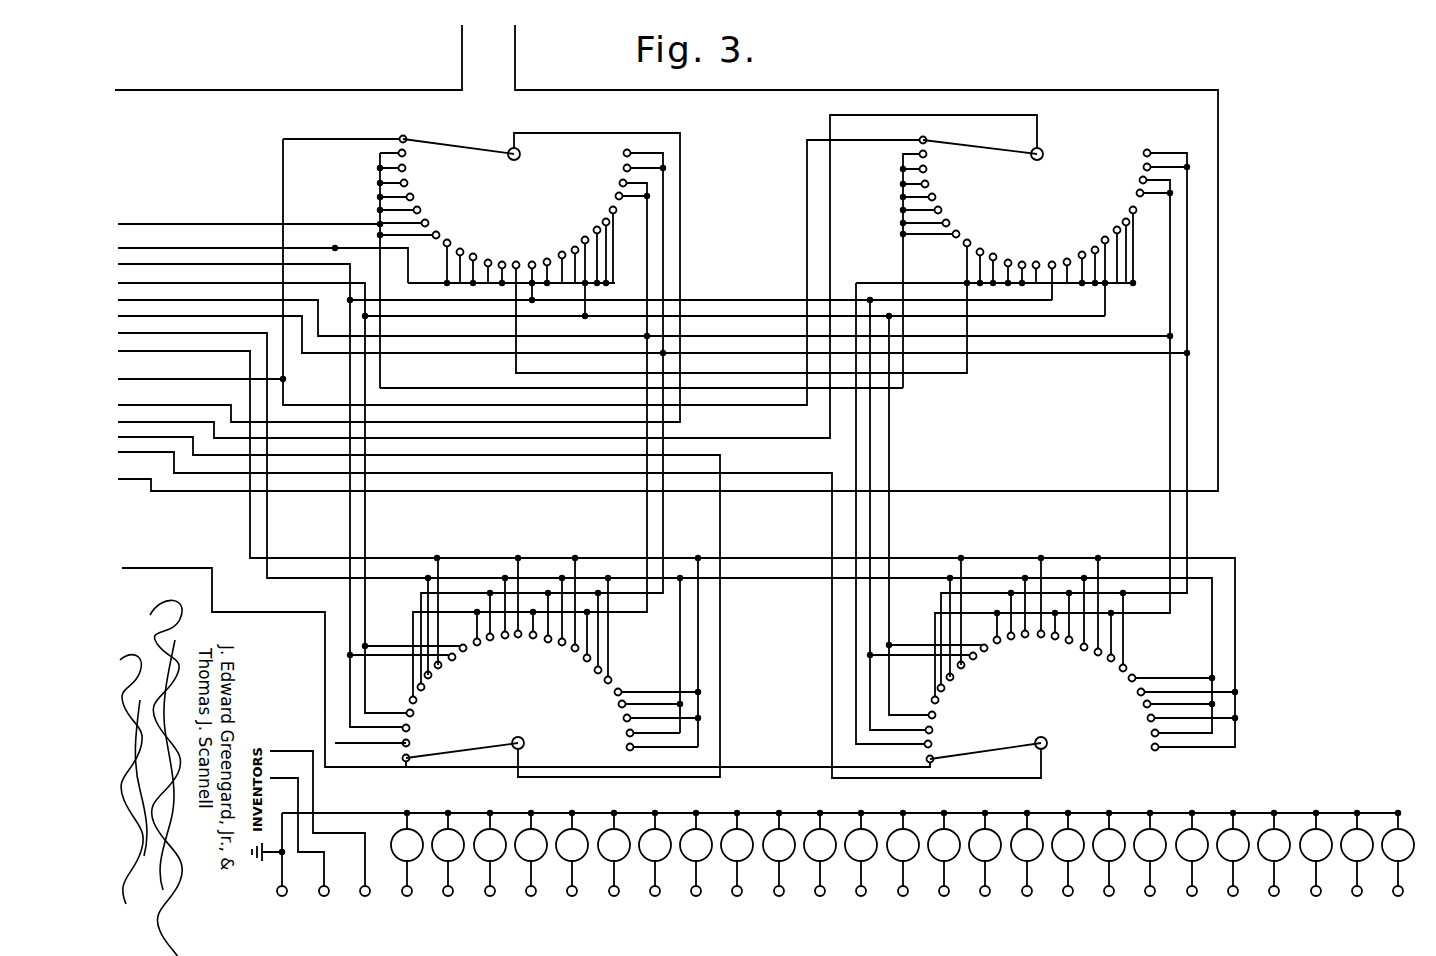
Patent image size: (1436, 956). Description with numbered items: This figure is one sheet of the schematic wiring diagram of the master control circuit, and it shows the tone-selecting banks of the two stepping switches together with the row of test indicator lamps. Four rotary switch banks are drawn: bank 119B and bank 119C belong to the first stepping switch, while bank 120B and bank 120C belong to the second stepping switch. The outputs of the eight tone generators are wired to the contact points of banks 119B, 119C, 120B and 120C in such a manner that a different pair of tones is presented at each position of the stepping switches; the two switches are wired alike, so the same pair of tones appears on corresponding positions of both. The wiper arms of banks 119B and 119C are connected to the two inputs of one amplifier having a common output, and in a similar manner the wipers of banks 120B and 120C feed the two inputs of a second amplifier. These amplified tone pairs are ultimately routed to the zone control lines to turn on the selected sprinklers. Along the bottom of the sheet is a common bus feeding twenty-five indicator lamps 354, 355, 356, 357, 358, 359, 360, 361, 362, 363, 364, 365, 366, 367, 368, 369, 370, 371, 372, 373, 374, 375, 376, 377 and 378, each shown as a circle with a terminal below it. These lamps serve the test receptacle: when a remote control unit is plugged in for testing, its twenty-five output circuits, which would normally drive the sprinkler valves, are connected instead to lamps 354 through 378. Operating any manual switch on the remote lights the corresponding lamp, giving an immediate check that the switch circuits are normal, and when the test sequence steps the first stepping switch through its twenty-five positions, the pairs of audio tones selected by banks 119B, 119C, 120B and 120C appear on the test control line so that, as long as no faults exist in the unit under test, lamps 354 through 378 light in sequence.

The bank B of stepping switch 119 119B is at (490, 200).
The bank B of stepping switch 120 120B is at (1016, 202).
The bank C of stepping switch 119 119C is at (556, 711).
The bank C of stepping switch 120 120C is at (1014, 712).
The indicator lamp 354 is at (394, 831).
The indicator lamp 355 is at (435, 831).
The indicator lamp 356 is at (477, 831).
The indicator lamp 357 is at (518, 831).
The indicator lamp 358 is at (559, 831).
The indicator lamp 359 is at (601, 831).
The indicator lamp 360 is at (642, 831).
The indicator lamp 361 is at (683, 831).
The indicator lamp 362 is at (724, 831).
The indicator lamp 363 is at (766, 831).
The indicator lamp 364 is at (807, 831).
The indicator lamp 365 is at (848, 831).
The indicator lamp 366 is at (890, 831).
The indicator lamp 367 is at (931, 831).
The indicator lamp 368 is at (972, 831).
The indicator lamp 369 is at (1014, 831).
The indicator lamp 370 is at (1055, 831).
The indicator lamp 371 is at (1097, 831).
The indicator lamp 372 is at (1137, 831).
The indicator lamp 373 is at (1178, 831).
The indicator lamp 374 is at (1220, 831).
The indicator lamp 375 is at (1260, 831).
The indicator lamp 376 is at (1303, 831).
The indicator lamp 377 is at (1345, 831).
The indicator lamp 378 is at (1410, 831).